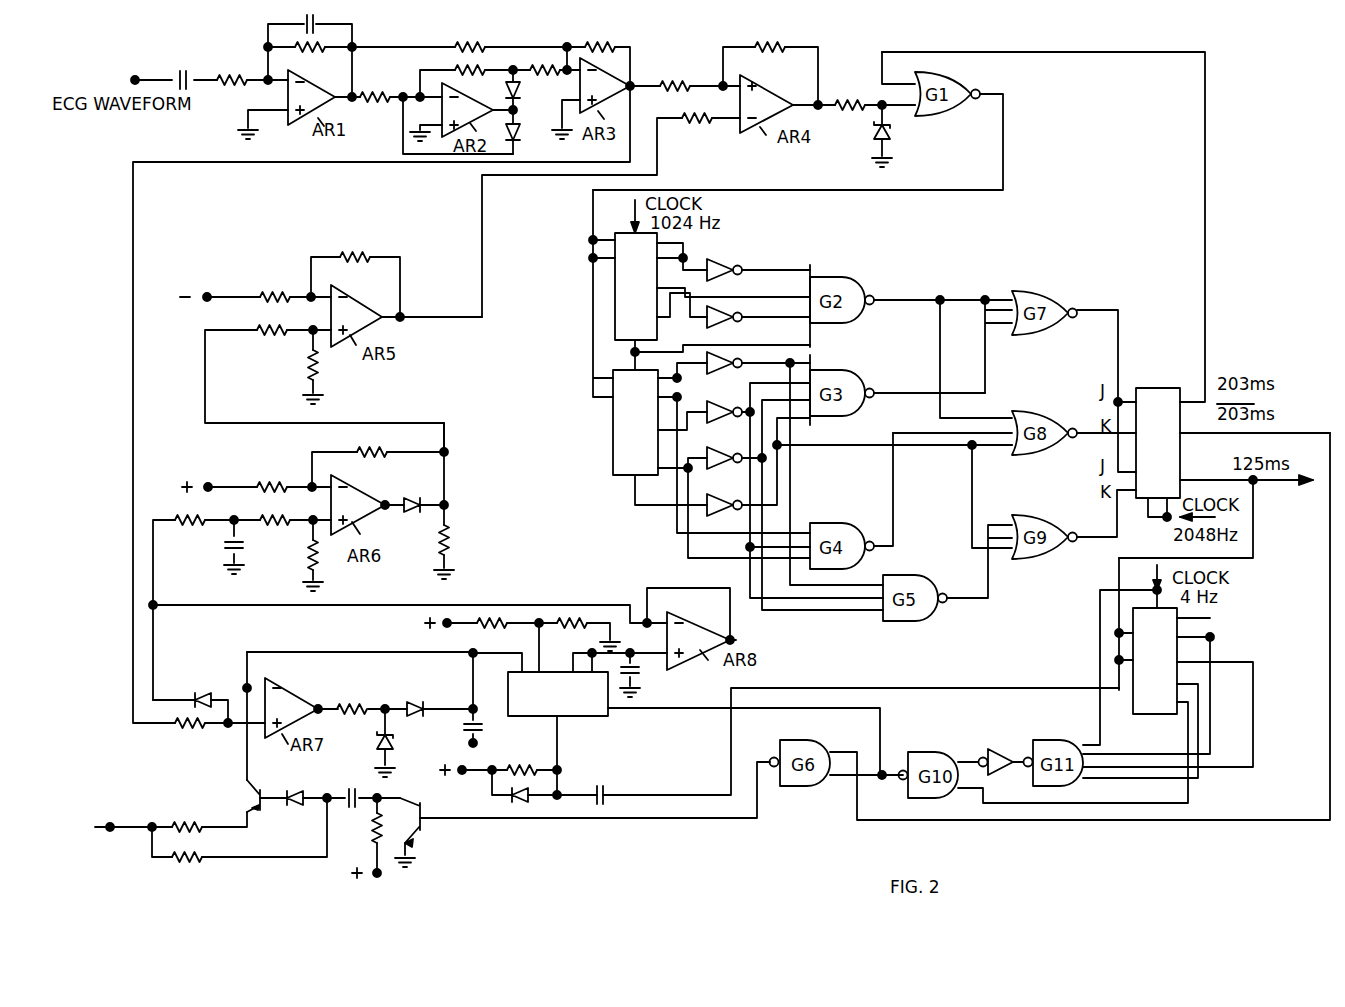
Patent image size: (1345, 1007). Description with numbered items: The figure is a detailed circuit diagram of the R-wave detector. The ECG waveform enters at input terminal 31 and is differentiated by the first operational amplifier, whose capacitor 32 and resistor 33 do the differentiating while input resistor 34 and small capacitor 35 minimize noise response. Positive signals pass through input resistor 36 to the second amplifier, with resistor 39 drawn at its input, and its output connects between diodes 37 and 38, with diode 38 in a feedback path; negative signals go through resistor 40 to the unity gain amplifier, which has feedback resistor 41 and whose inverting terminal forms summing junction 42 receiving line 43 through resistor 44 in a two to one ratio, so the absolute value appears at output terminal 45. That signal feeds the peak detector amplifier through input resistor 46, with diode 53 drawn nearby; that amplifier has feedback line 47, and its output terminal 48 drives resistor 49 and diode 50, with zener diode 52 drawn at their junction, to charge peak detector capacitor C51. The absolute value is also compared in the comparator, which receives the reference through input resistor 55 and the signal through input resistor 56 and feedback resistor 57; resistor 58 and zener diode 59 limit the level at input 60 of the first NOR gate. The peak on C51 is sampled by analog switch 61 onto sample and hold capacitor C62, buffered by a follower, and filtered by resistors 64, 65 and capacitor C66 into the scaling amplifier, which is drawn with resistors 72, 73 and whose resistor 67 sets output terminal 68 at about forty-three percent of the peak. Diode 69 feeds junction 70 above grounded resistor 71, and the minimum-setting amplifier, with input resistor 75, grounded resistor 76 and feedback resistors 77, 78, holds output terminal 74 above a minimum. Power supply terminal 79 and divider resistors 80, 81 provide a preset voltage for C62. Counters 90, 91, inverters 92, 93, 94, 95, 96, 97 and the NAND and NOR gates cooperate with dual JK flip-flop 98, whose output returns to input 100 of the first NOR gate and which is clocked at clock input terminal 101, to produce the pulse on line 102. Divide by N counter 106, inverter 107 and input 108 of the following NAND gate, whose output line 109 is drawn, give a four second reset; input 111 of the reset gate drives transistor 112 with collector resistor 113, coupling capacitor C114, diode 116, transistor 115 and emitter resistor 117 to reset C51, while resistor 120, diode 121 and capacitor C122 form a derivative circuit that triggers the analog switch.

The input terminal 31 is at (133, 77).
The capacitor 32 is at (180, 69).
The resistor 33 is at (312, 52).
The input resistor 34 is at (230, 71).
The capacitor 35 is at (313, 15).
The input resistor 36 is at (377, 91).
The diode 37 is at (523, 96).
The diode 38 is at (521, 133).
The resistor 39 is at (457, 68).
The resistor 40 is at (468, 44).
The feedback resistor 41 is at (604, 45).
The summing junction 42 is at (519, 74).
The line 43 is at (516, 45).
The resistor 44 is at (543, 64).
The output terminal 45 is at (634, 84).
The input resistor 46 is at (193, 731).
The feedback line 47 is at (362, 654).
The output terminal 48 is at (320, 707).
The resistor 49 is at (346, 714).
The diode 50 is at (417, 701).
The peak detector capacitor C51 is at (481, 722).
The zener diode 52 is at (391, 749).
The diode 53 is at (199, 694).
The input resistor 55 is at (699, 122).
The input resistor 56 is at (684, 83).
The feedback resistor 57 is at (767, 44).
The resistor 58 is at (848, 98).
The zener diode 59 is at (876, 134).
The input 60 is at (902, 109).
The analog switch 61 is at (604, 718).
The sample and hold capacitor C62 is at (636, 672).
The resistor 64 is at (185, 530).
The resistor 65 is at (278, 530).
The capacitor C66 is at (226, 550).
The resistor 67 is at (323, 569).
The output terminal 68 is at (385, 503).
The diode 69 is at (409, 513).
The junction 70 is at (449, 506).
The grounded resistor 71 is at (449, 547).
The resistor 72 is at (382, 456).
The resistor 73 is at (280, 482).
The output terminal 74 is at (414, 320).
The input resistor 75 is at (276, 336).
The grounded resistor 76 is at (327, 371).
The resistor 77 is at (281, 294).
The resistor 78 is at (360, 256).
The power supply terminal 79 is at (448, 621).
The resistor 80 is at (496, 621).
The resistor 81 is at (584, 621).
The counter 90 is at (613, 302).
The counter 91 is at (613, 420).
The inverter 92 is at (721, 266).
The inverter 93 is at (705, 323).
The inverter 94 is at (730, 363).
The inverter 95 is at (722, 406).
The inverter 96 is at (721, 453).
The inverter 97 is at (725, 502).
The dual JK flip-flop 98 is at (1150, 388).
The input 100 is at (952, 52).
The clock input terminal 101 is at (1149, 517).
The line 102 is at (1281, 484).
The divide by N counter 106 is at (1148, 722).
The inverter 107 is at (1004, 750).
The input 108 is at (980, 802).
The line 109 is at (841, 777).
The input 111 is at (842, 750).
The transistor 112 is at (428, 832).
The collector resistor 113 is at (375, 832).
The coupling capacitor C114 is at (353, 784).
The transistor 115 is at (262, 791).
The diode 116 is at (293, 808).
The emitter resistor 117 is at (185, 825).
The resistor 120 is at (507, 762).
The diode 121 is at (525, 805).
The capacitor C122 is at (602, 788).